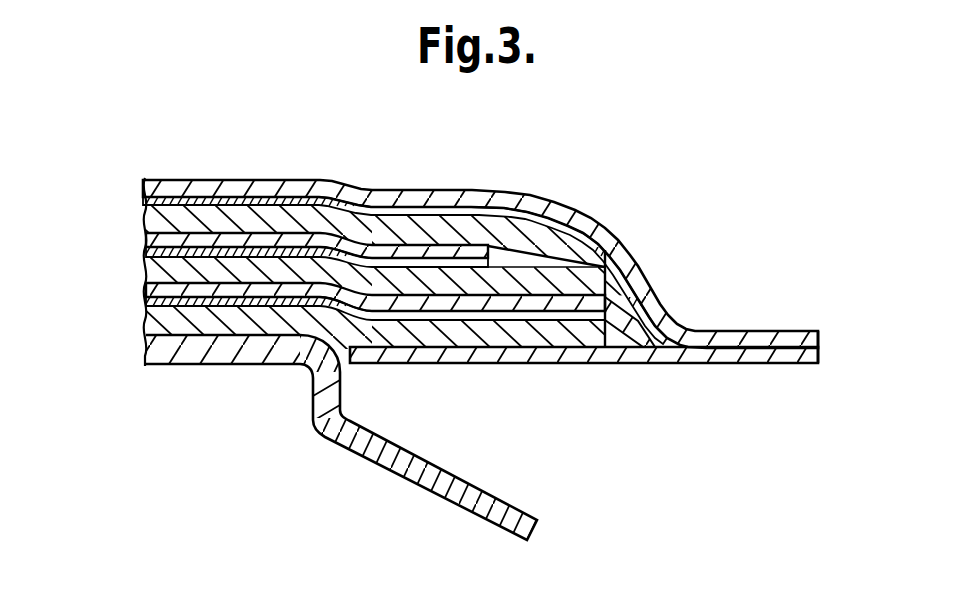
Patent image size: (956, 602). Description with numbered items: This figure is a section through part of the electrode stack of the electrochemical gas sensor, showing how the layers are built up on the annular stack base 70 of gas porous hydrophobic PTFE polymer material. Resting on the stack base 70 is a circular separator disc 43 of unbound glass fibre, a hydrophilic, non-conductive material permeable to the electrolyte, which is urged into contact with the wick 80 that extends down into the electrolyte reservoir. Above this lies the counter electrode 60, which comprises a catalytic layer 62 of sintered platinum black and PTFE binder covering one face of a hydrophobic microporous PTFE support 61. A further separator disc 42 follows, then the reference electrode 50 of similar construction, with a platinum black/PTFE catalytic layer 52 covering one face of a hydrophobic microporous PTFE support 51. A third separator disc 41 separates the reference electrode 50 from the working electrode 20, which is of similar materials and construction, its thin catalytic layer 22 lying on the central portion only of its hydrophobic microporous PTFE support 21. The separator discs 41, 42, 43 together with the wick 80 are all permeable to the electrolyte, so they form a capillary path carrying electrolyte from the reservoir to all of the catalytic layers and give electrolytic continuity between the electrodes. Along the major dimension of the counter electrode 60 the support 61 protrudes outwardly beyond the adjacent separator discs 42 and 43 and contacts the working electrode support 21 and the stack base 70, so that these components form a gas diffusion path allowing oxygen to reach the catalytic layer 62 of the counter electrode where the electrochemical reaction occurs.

The working electrode 20 is at (820, 333).
The hydrophobic microporous PTFE support 21 is at (467, 193).
The upper adhesive layer 22 is at (360, 210).
The third separator disc 41 is at (548, 337).
The further separator disc 42 is at (586, 285).
The separator disc 43 is at (536, 237).
The reference electrode 50 is at (289, 193).
The hydrophobic microporous PTFE support 51 is at (230, 238).
The catalytic layer 52 is at (290, 250).
The counter electrode 60 is at (373, 359).
The hydrophobic microporous PTFE support 61 is at (198, 293).
The catalytic layer 62 is at (268, 305).
The stack base 70 is at (486, 352).
The wick 80 is at (450, 488).